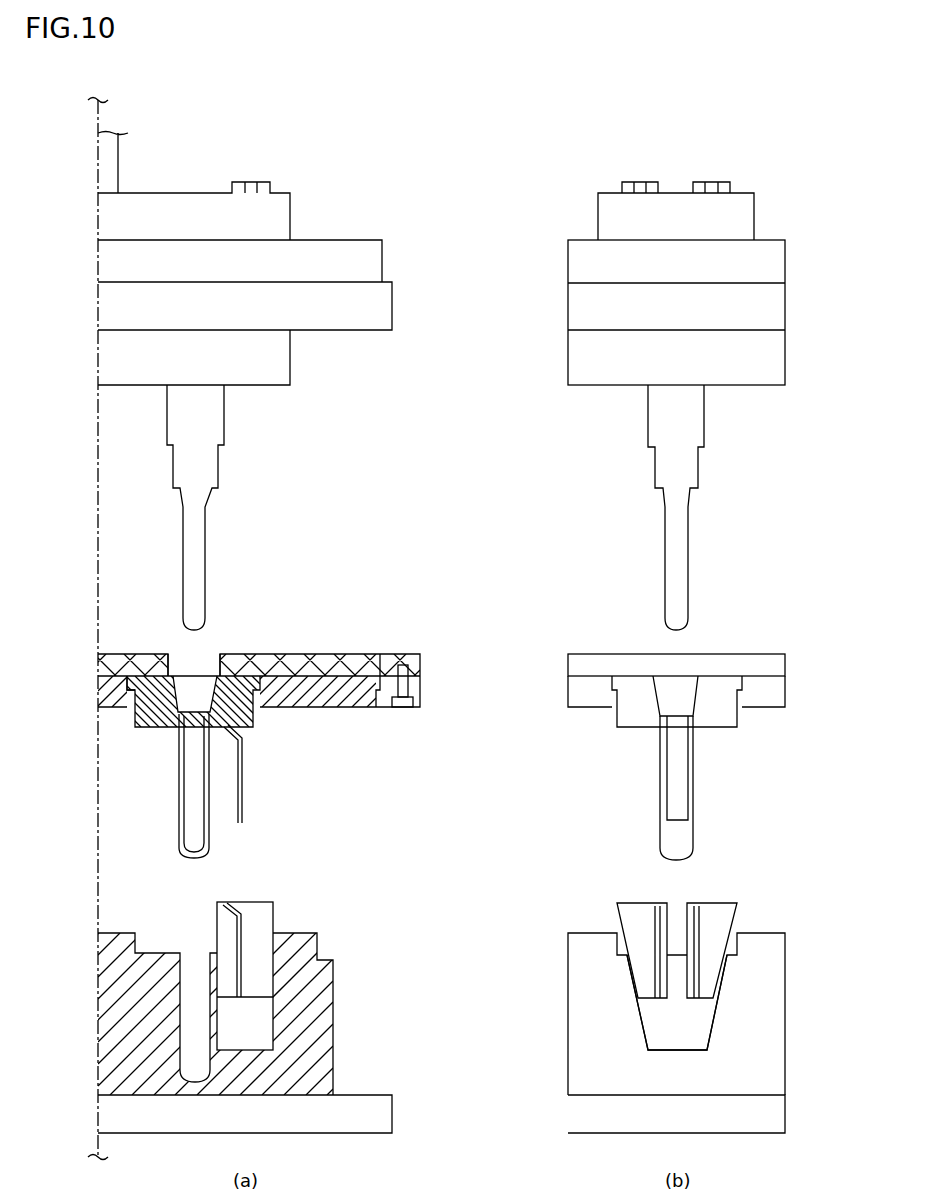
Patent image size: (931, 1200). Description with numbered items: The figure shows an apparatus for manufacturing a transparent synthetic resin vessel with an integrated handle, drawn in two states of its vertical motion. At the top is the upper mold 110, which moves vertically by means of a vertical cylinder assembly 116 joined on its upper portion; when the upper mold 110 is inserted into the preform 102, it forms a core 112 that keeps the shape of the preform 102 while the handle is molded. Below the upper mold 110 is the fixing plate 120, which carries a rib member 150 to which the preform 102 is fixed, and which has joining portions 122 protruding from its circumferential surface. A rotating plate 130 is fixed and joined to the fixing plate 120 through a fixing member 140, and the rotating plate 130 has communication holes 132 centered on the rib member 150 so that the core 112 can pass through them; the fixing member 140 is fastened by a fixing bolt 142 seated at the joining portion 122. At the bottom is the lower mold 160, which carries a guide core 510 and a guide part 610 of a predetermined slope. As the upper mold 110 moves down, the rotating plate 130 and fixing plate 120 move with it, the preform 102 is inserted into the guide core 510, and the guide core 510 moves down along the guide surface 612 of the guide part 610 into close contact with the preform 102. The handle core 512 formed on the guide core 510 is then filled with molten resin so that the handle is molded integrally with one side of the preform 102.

The preform 102 is at (178, 787).
The upper mold 110 is at (286, 360).
The core 112 is at (195, 397).
The vertical cylinder assembly 116 is at (286, 217).
The fixing plate 120 is at (356, 700).
The joining portion 122 is at (380, 670).
The rotating plate 130 is at (420, 660).
The communication hole 132 is at (200, 655).
The fixing member 140 is at (420, 688).
The bolt 142 is at (384, 708).
The rib member 150 is at (135, 690).
The lower mold 160 is at (388, 1115).
The guide core 510 is at (716, 908).
The handle core 512 is at (660, 908).
The guide part 610 is at (700, 1033).
The guide surface 612 is at (715, 1015).